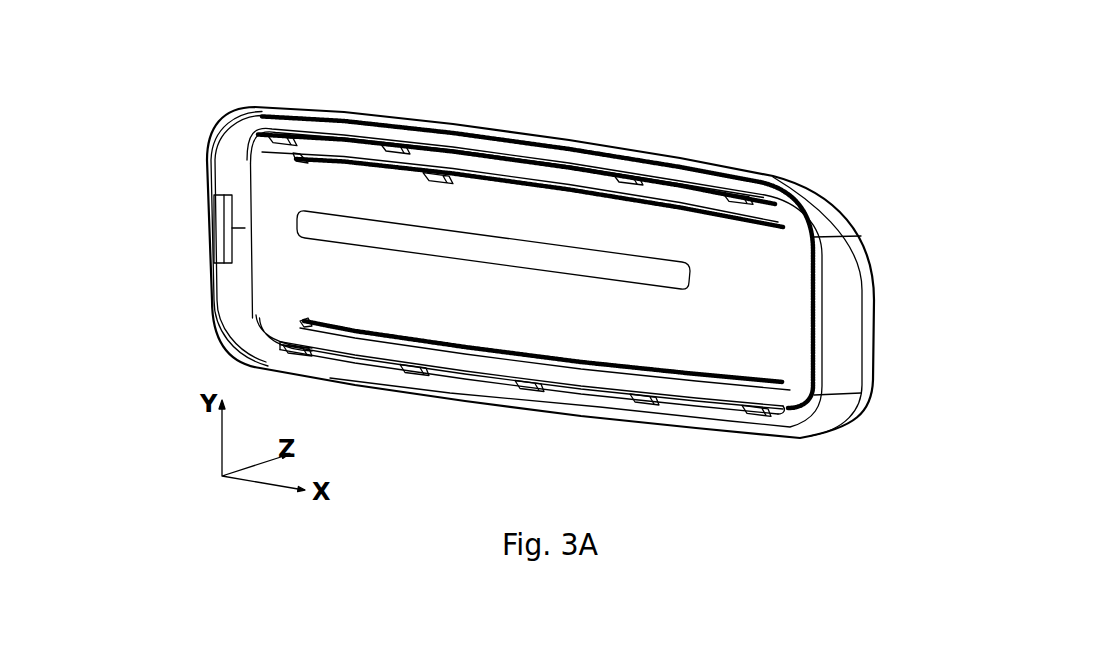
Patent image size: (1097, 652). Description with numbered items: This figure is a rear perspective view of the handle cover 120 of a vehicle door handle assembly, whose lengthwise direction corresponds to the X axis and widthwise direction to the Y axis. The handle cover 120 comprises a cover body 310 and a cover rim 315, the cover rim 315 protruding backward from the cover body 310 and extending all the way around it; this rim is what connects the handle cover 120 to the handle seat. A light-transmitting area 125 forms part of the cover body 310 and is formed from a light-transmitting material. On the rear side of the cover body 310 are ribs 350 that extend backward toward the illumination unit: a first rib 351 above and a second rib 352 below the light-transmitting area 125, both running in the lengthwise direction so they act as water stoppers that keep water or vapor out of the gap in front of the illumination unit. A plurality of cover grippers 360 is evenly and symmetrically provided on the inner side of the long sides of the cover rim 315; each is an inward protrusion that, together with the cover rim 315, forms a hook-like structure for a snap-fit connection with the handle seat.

The handle cover 120 is at (876, 80).
The light-transmitting area 125 is at (572, 267).
The cover body 310 is at (710, 360).
The cover rim 315 is at (840, 310).
The ribs 350 is at (106, 256).
The first rib 351 is at (293, 160).
The second rib 352 is at (318, 324).
The cover grippers 360 is at (510, 395).